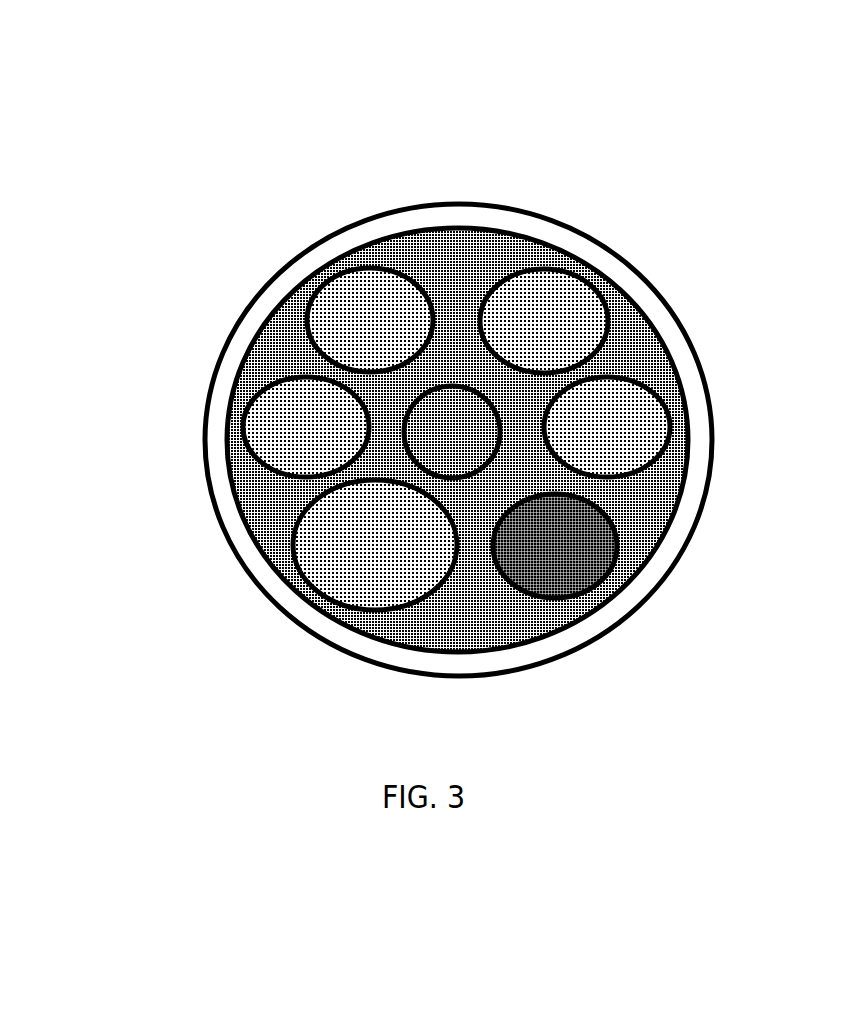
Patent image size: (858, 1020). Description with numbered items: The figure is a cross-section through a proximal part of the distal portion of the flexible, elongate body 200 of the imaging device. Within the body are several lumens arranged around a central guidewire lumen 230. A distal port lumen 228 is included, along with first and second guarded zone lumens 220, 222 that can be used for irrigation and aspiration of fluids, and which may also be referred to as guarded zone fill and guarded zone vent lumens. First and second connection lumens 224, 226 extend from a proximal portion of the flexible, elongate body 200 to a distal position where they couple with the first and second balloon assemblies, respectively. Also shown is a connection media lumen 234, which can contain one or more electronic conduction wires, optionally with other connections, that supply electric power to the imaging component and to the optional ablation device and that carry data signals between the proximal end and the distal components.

The flexible, elongate body 200 is at (580, 242).
The first guarded zone lumen 220 is at (263, 438).
The second guarded zone lumen 222 is at (616, 429).
The first connection lumen 224 is at (329, 315).
The second connection lumen 226 is at (593, 314).
The distal port lumen 228 is at (364, 587).
The guidewire lumen 230 is at (455, 420).
The connection media lumen 234 is at (571, 544).